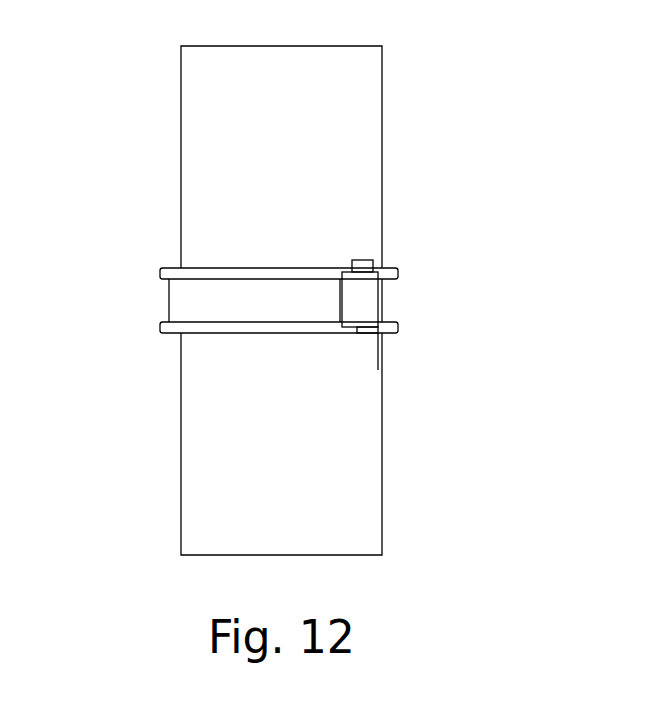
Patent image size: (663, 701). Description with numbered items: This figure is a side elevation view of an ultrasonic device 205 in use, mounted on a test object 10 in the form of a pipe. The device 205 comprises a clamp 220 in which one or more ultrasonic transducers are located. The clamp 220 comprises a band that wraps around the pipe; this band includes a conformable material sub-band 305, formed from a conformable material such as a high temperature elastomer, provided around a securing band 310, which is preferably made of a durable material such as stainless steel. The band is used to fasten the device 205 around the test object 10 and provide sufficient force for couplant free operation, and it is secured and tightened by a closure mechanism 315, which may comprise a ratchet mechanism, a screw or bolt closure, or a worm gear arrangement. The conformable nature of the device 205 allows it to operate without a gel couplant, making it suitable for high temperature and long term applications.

The test object 10 is at (363, 110).
The ultrasonic device 205 is at (435, 336).
The clamp 220 is at (282, 324).
The conformable material sub-band 305 is at (160, 270).
The securing band 310 is at (170, 300).
The closure mechanism 315 is at (378, 301).